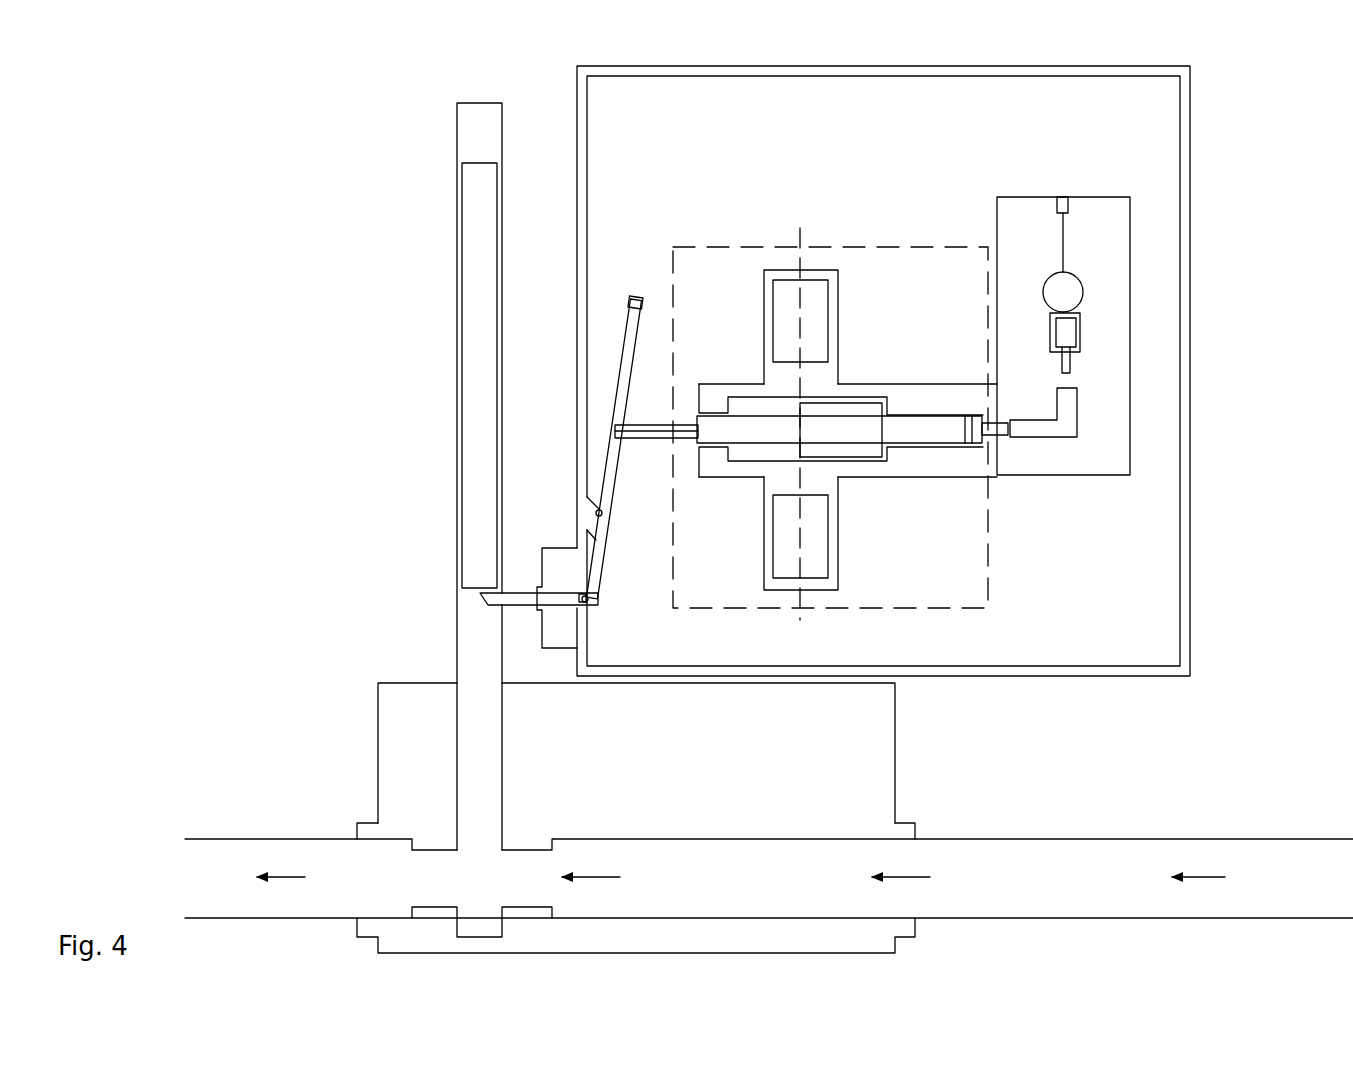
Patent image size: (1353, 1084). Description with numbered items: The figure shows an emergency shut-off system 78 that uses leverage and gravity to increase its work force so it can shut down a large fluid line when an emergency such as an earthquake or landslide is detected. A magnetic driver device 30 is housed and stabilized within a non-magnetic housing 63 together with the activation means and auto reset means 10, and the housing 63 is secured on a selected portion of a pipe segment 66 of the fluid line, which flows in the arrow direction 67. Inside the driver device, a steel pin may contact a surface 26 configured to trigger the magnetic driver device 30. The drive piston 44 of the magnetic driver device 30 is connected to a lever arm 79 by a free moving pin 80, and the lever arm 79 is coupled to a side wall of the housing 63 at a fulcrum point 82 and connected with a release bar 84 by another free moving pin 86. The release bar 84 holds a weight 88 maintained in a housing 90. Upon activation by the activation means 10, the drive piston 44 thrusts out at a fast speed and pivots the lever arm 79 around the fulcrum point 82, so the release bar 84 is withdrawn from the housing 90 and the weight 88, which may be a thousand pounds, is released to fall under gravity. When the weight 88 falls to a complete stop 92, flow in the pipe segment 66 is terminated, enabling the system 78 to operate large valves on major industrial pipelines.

The activation means and auto reset means 10 is at (997, 197).
The surface 26 is at (906, 463).
The magnetic driver device 30 is at (1032, 571).
The drive piston 44 is at (695, 417).
The non-magnetic housing 63 is at (1183, 170).
The pipe segment 66 is at (703, 855).
The arrow direction 67 is at (1203, 873).
The emergency shut-off system 78 is at (398, 92).
The lever arm 79 is at (634, 299).
The free moving pin 80 is at (620, 444).
The fulcrum point 82 is at (602, 516).
The release bar 84 is at (602, 597).
The free moving pin 86 is at (597, 604).
The weight 88 is at (461, 222).
The housing 90 is at (465, 157).
The complete stop 92 is at (478, 936).